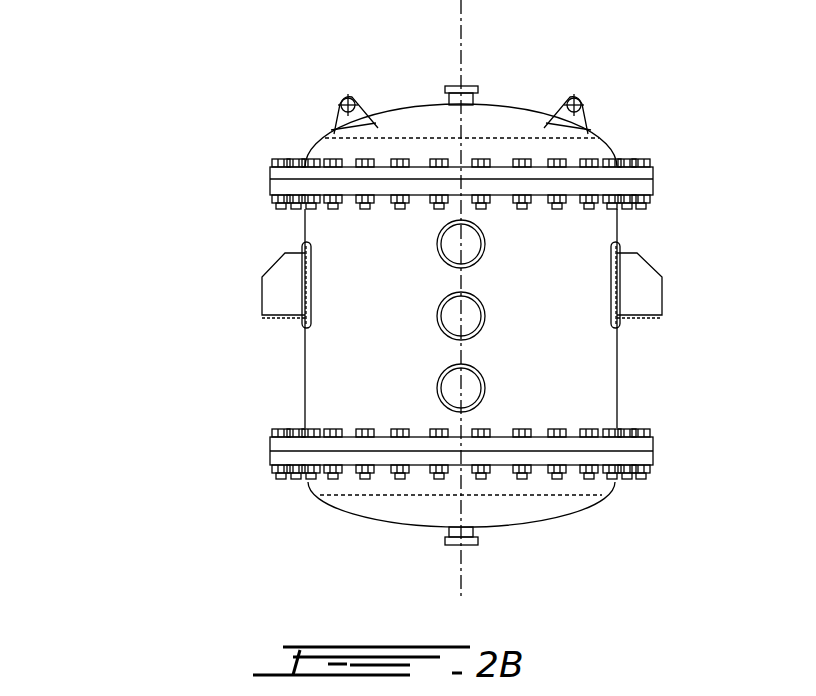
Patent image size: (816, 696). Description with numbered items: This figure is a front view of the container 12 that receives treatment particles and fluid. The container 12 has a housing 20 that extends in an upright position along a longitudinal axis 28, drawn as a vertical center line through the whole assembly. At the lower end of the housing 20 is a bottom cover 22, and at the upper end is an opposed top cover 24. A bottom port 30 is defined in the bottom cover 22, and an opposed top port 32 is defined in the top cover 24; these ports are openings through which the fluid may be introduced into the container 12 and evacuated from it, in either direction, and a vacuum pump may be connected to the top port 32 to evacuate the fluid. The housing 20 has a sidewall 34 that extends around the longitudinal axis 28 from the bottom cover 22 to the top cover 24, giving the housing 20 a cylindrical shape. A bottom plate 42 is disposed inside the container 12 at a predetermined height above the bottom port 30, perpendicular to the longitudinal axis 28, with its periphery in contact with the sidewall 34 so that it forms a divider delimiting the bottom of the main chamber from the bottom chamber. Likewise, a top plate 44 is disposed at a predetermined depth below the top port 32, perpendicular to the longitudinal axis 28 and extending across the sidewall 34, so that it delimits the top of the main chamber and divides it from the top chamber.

The container 12 is at (148, 125).
The housing 20 is at (332, 346).
The bottom cover 22 is at (545, 505).
The top cover 24 is at (512, 126).
The longitudinal axis 28 is at (459, 17).
The bottom port 30 is at (445, 540).
The top port 32 is at (447, 88).
The sidewall 34 is at (553, 368).
The bottom plate 42 is at (270, 452).
The top plate 44 is at (653, 181).